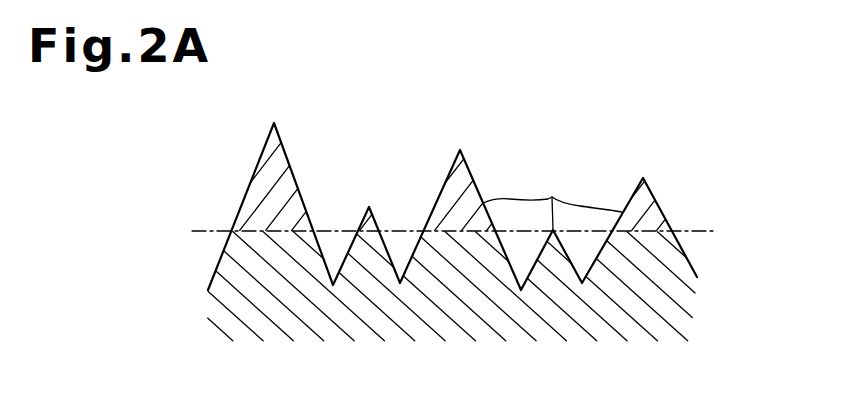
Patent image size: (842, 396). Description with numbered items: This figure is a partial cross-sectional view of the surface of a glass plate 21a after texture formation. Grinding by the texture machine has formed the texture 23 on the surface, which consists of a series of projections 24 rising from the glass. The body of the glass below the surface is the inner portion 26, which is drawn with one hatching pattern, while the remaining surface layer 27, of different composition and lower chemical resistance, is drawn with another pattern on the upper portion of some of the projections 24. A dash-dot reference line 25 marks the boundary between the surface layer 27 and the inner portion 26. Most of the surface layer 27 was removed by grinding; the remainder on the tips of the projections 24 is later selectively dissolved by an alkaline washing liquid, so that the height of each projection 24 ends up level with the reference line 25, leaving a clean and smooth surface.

The glass plate 21a is at (623, 140).
The texture 23 is at (552, 197).
The projection 24 is at (277, 142).
The reference line 25 is at (692, 231).
The inner portion 26 is at (470, 328).
The surface layer 27 is at (287, 178).